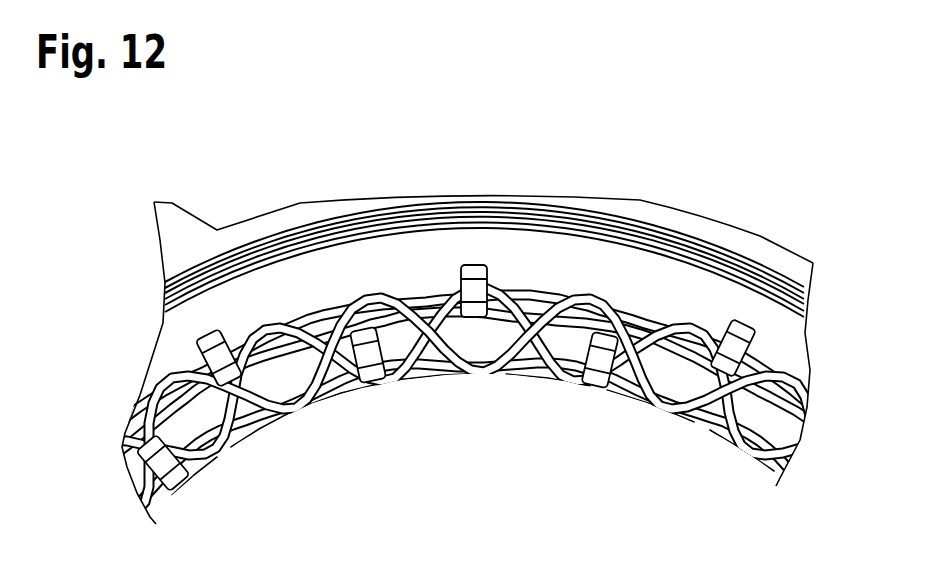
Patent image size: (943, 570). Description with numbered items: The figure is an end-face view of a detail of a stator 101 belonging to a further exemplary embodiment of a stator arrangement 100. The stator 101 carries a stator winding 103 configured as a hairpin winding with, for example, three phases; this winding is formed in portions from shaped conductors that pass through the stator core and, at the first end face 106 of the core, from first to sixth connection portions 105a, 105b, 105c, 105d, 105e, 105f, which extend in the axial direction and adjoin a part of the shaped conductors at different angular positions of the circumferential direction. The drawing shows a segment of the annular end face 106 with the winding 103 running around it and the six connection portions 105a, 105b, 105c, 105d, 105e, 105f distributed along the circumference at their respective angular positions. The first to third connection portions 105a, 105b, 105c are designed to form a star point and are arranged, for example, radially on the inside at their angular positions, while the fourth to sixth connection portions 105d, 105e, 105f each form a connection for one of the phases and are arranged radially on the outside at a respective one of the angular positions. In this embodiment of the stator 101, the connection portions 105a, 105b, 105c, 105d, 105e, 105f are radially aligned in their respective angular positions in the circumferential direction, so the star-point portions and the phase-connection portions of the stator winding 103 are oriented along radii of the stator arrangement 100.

The stator arrangement 100 is at (812, 118).
The stator 101 is at (712, 250).
The stator winding 103 is at (806, 382).
The first connection portion 105a is at (196, 492).
The second connection portion 105b is at (589, 404).
The third connection portion 105c is at (380, 404).
The fourth connection portion 105d is at (192, 326).
The fifth connection portion 105e is at (767, 290).
The sixth connection portion 105f is at (478, 236).
The first end face 106 is at (407, 243).